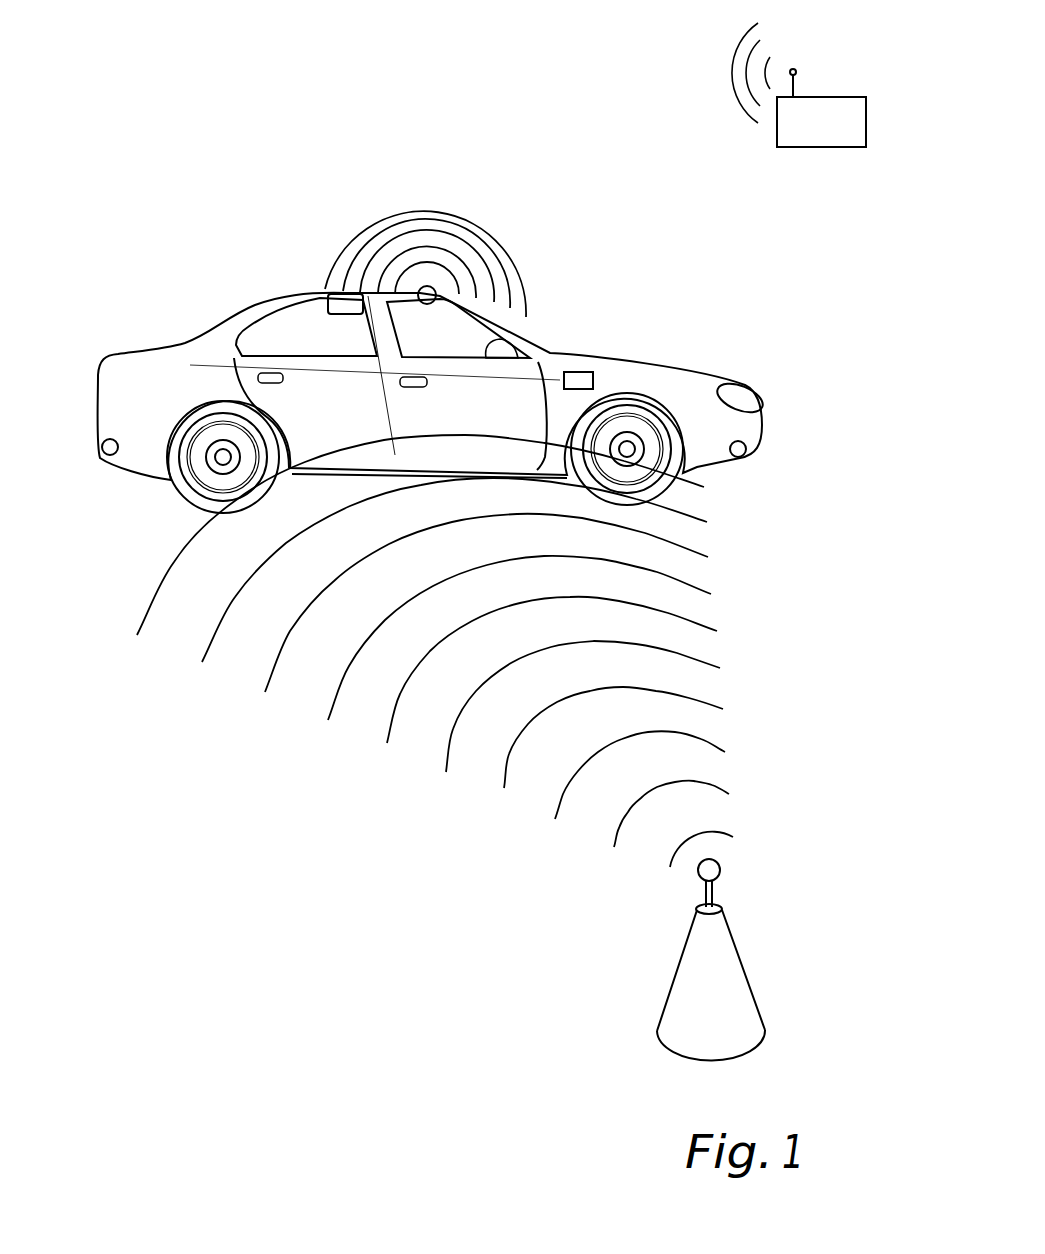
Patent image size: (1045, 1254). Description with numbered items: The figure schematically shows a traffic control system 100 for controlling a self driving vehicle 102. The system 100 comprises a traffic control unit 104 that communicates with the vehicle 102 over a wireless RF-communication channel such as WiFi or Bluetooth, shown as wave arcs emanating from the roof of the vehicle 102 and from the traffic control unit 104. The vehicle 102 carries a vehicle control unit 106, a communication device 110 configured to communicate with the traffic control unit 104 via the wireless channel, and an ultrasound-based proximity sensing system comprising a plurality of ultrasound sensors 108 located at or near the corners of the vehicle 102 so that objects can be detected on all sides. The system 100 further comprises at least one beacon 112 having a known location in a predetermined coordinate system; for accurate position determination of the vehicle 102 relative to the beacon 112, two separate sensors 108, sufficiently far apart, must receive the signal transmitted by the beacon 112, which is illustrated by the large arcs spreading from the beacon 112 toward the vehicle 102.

The traffic control system 100 is at (345, 152).
The self driving vehicle 102 is at (644, 362).
The traffic control unit 104 is at (822, 148).
The vehicle control unit 106 is at (583, 372).
The ultrasound sensors 108 is at (98, 457).
The communication device 110 is at (342, 302).
The beacon 112 is at (682, 1007).